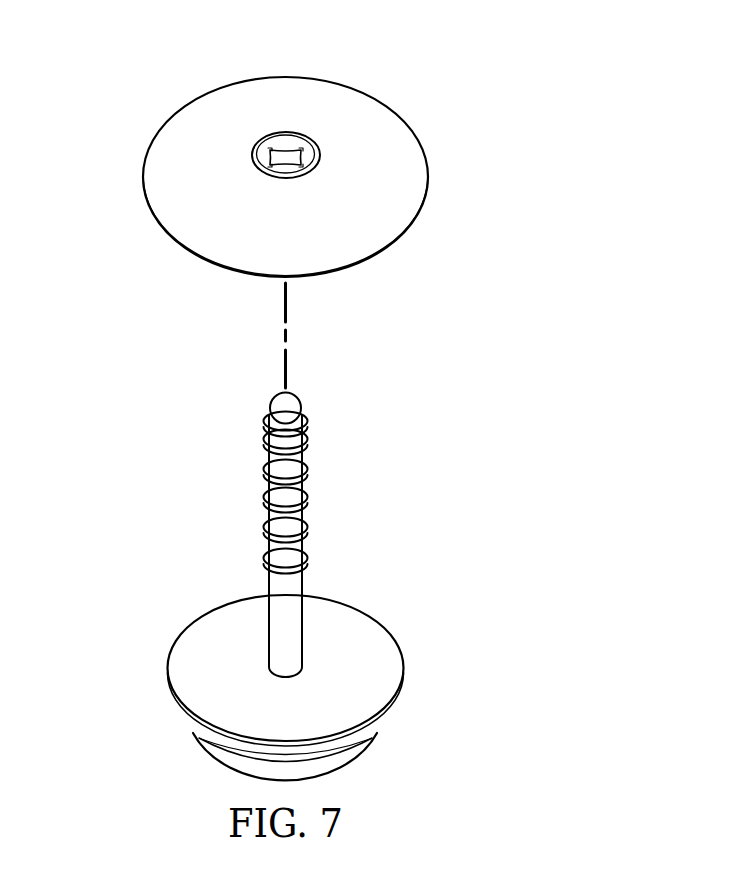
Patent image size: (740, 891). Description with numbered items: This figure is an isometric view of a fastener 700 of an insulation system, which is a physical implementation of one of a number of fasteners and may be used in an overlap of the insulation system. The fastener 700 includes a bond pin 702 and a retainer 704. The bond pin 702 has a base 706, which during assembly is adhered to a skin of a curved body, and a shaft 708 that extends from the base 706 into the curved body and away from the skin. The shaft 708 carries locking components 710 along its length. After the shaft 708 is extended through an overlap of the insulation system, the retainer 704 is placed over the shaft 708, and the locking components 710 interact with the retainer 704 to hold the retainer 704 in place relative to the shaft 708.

The fastener 700 is at (488, 95).
The bond pin 702 is at (137, 617).
The retainer 704 is at (137, 130).
The base 706 is at (215, 625).
The shaft 708 is at (263, 414).
The locking components 710 is at (303, 582).